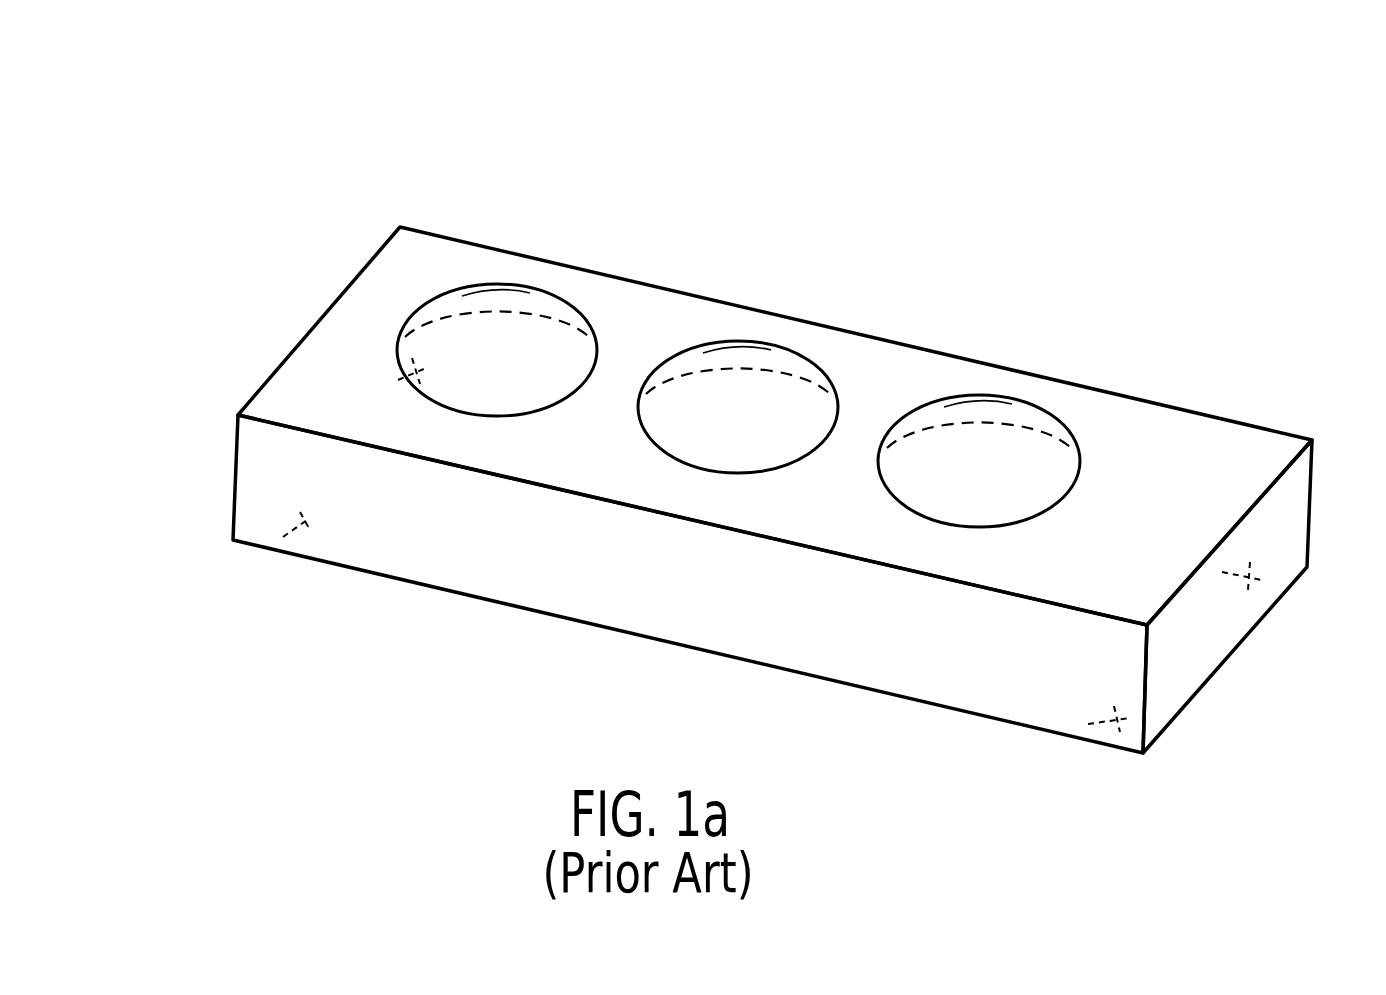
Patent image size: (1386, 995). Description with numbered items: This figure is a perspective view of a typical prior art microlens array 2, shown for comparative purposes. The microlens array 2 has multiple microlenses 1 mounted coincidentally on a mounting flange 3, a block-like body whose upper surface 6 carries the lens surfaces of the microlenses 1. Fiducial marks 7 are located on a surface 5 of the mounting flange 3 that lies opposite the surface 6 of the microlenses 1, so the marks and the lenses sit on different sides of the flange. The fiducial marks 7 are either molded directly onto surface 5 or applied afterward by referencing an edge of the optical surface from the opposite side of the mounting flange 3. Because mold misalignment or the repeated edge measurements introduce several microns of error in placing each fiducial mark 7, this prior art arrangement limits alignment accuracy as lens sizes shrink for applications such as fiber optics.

The microlenses 1 is at (500, 292).
The microlens array 2 is at (808, 401).
The mounting flange 3 is at (1300, 497).
The surface 5 is at (523, 568).
The surface 6 is at (627, 302).
The fiducial marks 7 is at (407, 388).